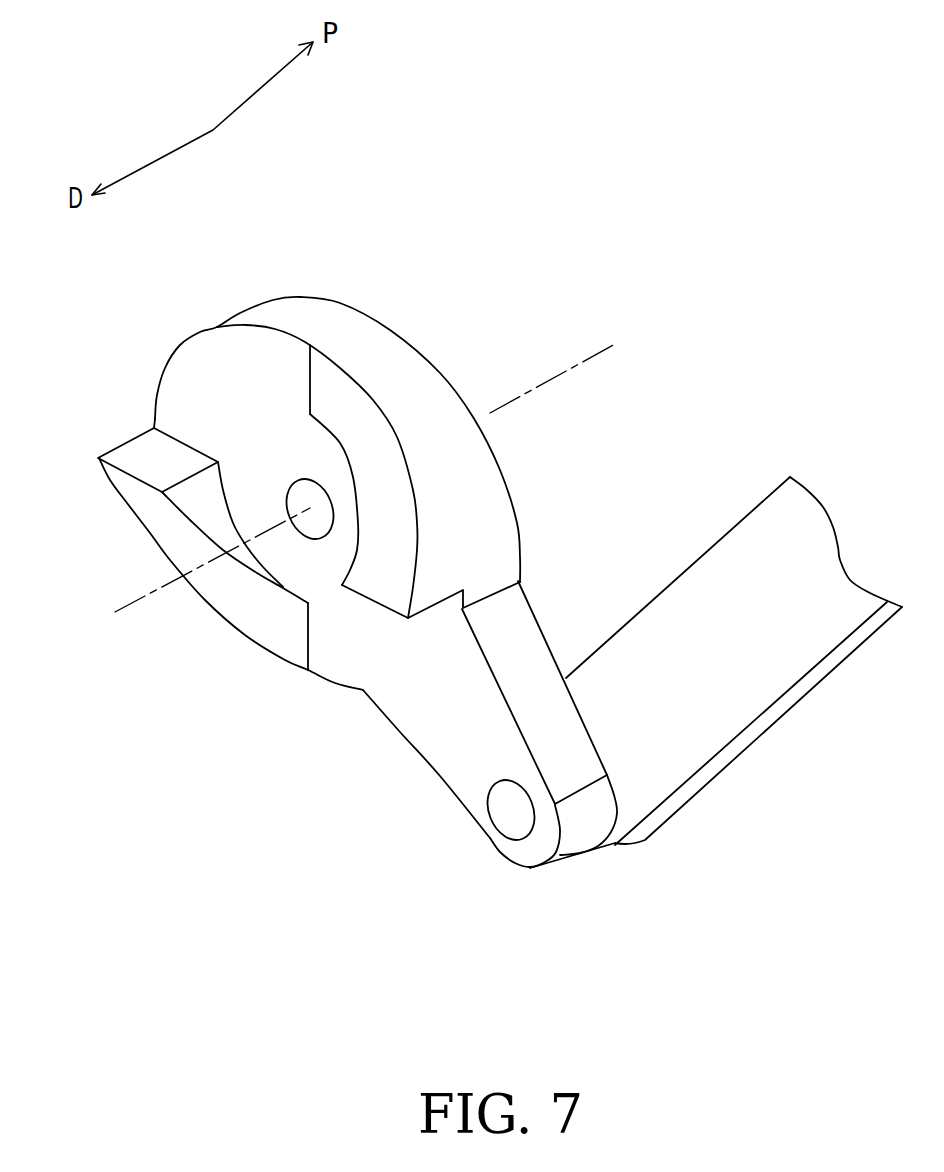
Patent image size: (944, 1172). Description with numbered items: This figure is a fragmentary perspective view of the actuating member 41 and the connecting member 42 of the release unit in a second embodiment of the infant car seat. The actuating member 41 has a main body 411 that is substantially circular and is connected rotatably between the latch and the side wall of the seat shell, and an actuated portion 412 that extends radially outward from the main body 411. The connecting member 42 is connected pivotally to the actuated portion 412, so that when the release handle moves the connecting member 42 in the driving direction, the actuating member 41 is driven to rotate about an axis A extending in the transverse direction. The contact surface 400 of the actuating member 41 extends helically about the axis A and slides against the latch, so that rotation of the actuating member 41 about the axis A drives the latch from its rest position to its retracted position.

The actuating member 41 is at (269, 458).
The main body 411 is at (303, 317).
The contact surface 400 is at (145, 503).
The actuated portion 412 is at (458, 773).
The connecting member 42 is at (697, 613).
The axis A is at (383, 467).